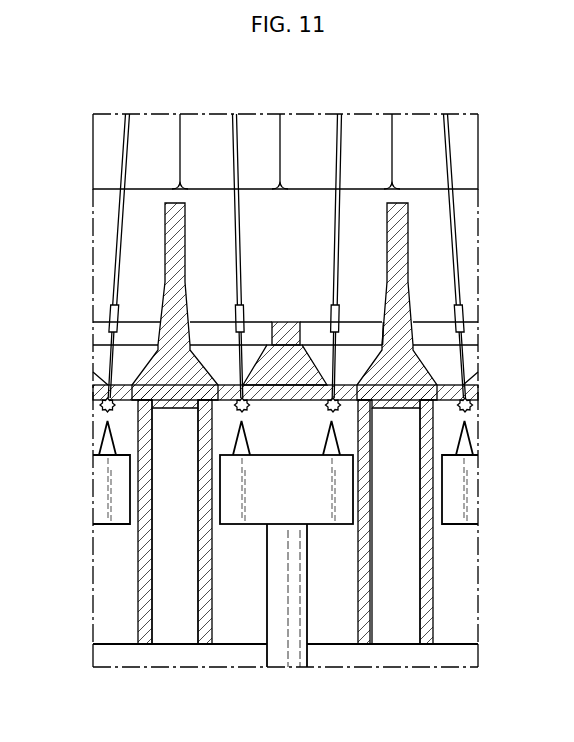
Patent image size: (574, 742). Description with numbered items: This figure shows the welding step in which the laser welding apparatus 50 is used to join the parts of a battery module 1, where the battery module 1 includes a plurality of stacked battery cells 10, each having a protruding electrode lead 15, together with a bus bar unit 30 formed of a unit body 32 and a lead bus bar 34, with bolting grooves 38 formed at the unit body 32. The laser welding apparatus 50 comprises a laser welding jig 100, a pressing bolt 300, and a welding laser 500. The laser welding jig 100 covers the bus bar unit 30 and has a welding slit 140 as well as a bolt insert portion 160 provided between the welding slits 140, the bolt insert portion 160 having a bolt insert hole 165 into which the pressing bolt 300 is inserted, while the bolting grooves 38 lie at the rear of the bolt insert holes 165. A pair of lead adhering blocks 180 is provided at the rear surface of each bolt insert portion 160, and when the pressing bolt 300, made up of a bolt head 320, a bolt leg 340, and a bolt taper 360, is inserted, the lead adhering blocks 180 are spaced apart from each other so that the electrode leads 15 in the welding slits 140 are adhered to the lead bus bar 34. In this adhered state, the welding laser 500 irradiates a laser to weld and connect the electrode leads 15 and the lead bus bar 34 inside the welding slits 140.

The battery module 1 is at (253, 370).
The battery cell 10 is at (470, 152).
The electrode lead 15 is at (458, 261).
The bus bar unit 30 is at (327, 324).
The unit body 32 is at (290, 328).
The lead bus bar 34 is at (290, 400).
The bolting groove 38 is at (382, 328).
The laser welding apparatus 50 is at (248, 472).
The laser welding jig 100 is at (293, 555).
The welding slit 140 is at (228, 648).
The bolt insert portion 160 is at (143, 600).
The bolt insert hole 165 is at (157, 540).
The lead adhering block 180 is at (108, 400).
The pressing bolt 300 is at (170, 372).
The bolt head 320 is at (408, 380).
The bolt leg 340 is at (400, 232).
The bolt taper 360 is at (408, 300).
The welding laser 500 is at (238, 527).